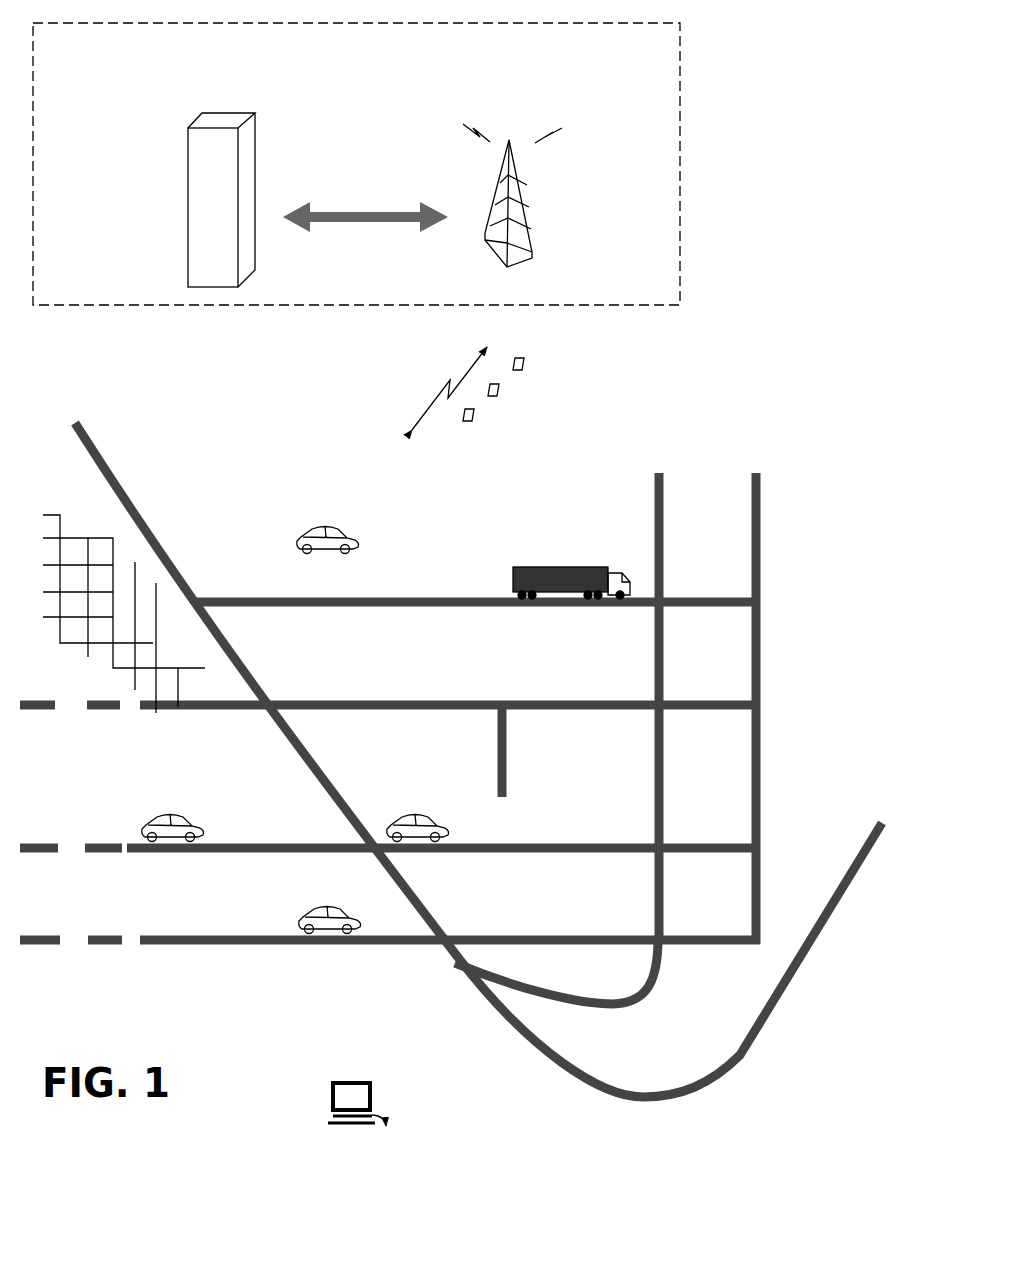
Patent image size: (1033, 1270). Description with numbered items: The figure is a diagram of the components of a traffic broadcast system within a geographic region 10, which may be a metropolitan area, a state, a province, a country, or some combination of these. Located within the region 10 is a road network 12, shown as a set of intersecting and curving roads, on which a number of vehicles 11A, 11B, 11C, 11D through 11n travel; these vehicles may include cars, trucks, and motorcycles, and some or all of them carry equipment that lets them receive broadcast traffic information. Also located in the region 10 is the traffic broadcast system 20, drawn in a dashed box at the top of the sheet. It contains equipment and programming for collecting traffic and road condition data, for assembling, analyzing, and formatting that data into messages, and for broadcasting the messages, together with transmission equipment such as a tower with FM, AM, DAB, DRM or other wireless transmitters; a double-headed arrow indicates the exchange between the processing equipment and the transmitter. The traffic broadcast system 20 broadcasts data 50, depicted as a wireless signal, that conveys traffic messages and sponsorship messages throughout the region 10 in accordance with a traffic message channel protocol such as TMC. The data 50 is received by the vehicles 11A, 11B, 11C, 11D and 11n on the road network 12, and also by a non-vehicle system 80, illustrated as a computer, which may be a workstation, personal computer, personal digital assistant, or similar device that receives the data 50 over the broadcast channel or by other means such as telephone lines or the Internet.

The region 10 is at (733, 405).
The vehicle 11A is at (348, 523).
The vehicle 11B is at (130, 797).
The vehicle 11C is at (295, 897).
The vehicle 11D is at (537, 548).
The vehicle 11n is at (398, 795).
The road network 12 is at (153, 535).
The traffic broadcast system 20 is at (467, 59).
The data 50 is at (515, 398).
The non-vehicle system 80 is at (393, 1090).